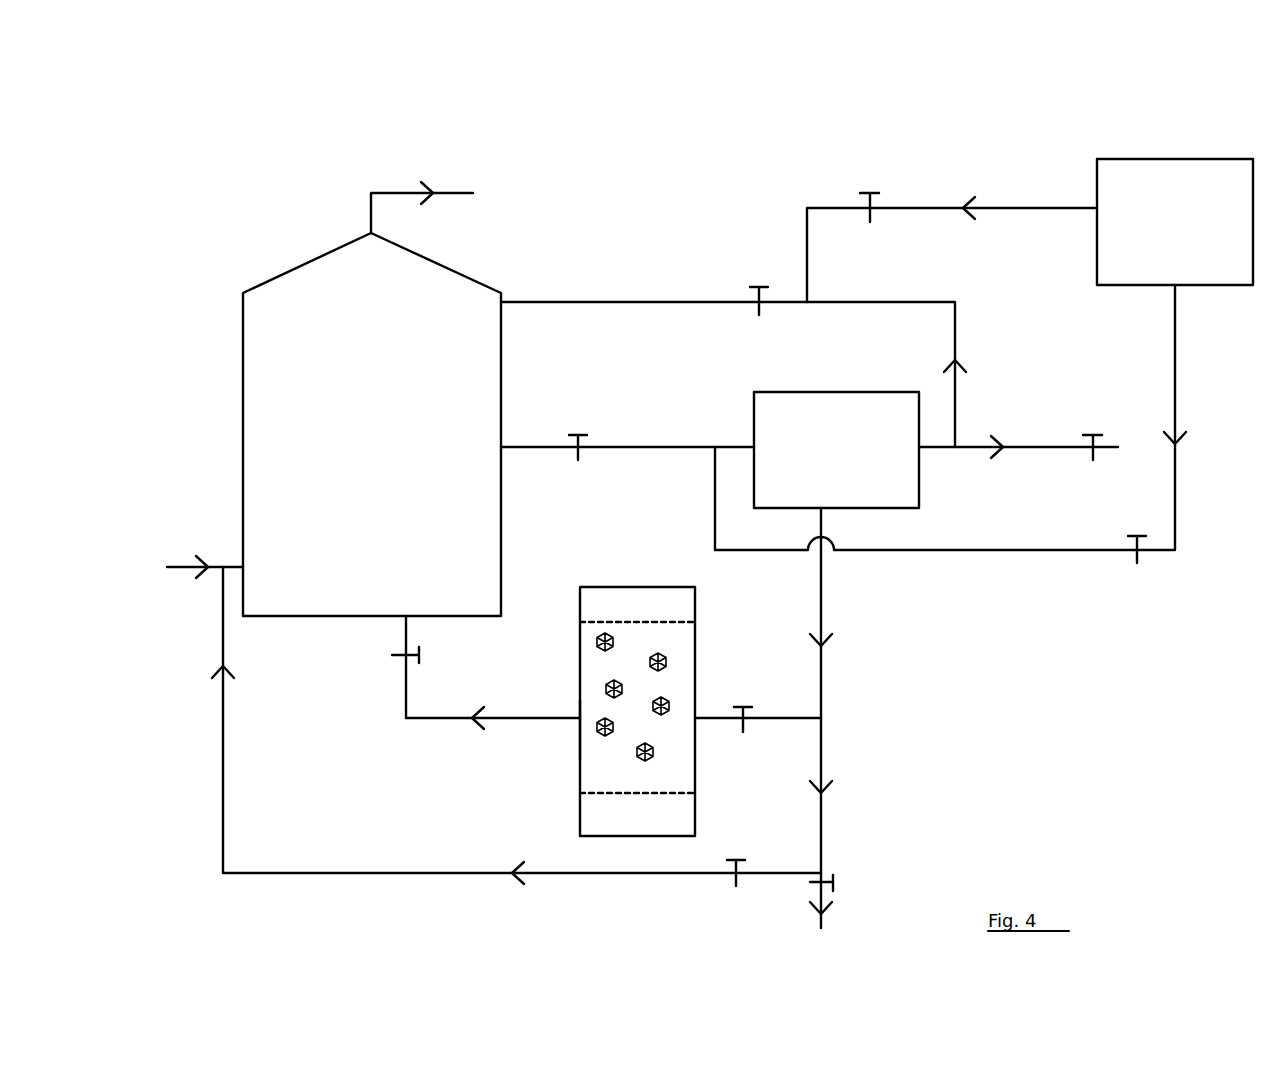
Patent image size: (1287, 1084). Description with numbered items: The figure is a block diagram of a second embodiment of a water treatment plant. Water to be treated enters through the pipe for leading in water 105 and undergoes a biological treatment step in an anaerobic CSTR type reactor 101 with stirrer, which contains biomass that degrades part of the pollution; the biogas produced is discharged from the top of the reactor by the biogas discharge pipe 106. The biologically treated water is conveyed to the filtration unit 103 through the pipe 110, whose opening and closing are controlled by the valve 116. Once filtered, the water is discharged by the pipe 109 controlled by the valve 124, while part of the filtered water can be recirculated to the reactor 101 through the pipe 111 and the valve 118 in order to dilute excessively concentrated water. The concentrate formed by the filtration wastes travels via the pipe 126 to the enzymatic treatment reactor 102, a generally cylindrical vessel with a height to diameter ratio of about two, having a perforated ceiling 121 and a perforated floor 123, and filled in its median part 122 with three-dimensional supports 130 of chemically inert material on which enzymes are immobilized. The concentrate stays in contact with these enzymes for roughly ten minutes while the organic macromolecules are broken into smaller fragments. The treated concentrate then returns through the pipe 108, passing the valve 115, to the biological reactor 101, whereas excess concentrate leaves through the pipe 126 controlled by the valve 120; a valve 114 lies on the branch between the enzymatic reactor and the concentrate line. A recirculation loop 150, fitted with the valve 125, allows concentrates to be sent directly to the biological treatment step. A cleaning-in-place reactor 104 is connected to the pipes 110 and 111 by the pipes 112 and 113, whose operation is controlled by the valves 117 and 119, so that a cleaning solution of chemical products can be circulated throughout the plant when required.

The anaerobic CSTR type reactor 101 is at (243, 373).
The enzymatic treatment reactor 102 is at (608, 703).
The filtration unit 103 is at (820, 392).
The cleaning-in-place reactor 104 is at (1197, 158).
The pipe for leading in water 105 is at (183, 567).
The biogas discharge pipe 106 is at (462, 192).
The pipe 108 is at (411, 719).
The pipe 109 is at (1053, 449).
The pipe 110 is at (705, 447).
The pipe 111 is at (870, 301).
The pipe 112 is at (1178, 392).
The pipe 113 is at (993, 208).
The valve 114 is at (741, 709).
The valve 115 is at (420, 658).
The valve 116 is at (575, 433).
The valve 117 is at (1132, 535).
The valve 118 is at (752, 286).
The valve 119 is at (862, 192).
The valve 120 is at (836, 880).
The ceiling 121 is at (588, 607).
The median part 122 is at (588, 777).
The floor 123 is at (588, 820).
The valve 124 is at (1085, 434).
The valve 125 is at (727, 878).
The pipe 126 is at (822, 752).
The three-dimensional supports 130 is at (650, 758).
The recirculation loop 150 is at (405, 874).